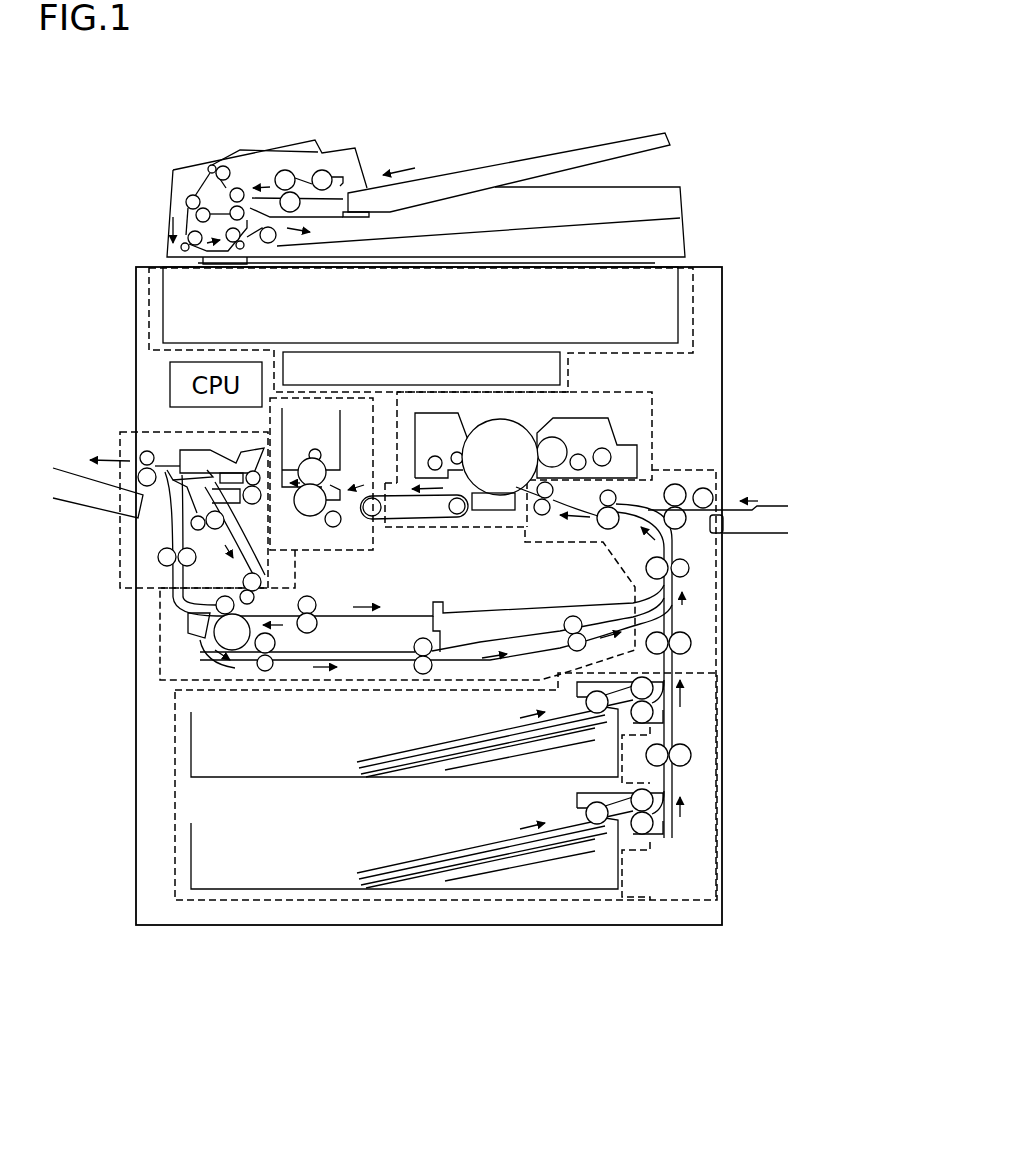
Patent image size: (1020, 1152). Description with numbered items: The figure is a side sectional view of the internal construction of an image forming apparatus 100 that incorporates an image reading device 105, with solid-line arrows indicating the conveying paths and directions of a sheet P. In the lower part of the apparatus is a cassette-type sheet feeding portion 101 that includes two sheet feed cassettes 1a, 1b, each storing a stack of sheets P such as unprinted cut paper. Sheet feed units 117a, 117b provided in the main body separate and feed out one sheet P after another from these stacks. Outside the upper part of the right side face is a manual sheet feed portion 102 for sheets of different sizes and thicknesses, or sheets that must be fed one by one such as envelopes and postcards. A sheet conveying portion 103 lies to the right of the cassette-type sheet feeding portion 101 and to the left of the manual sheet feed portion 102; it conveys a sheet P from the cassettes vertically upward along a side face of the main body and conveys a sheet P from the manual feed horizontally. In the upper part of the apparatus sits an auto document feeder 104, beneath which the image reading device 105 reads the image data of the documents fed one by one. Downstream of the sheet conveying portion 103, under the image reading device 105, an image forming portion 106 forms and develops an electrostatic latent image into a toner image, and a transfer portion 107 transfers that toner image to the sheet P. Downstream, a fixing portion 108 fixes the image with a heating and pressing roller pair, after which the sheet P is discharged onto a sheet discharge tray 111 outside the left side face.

The image forming apparatus 100 is at (718, 149).
The cassette-type sheet feeding portion 101 is at (175, 870).
The manual sheet feed portion 102 is at (792, 515).
The sheet conveying portion 103 is at (680, 470).
The auto document feeder 104 is at (465, 168).
The image reading device 105 is at (693, 338).
The image forming portion 106 is at (600, 392).
The transfer portion 107 is at (503, 527).
The fixing portion 108 is at (330, 548).
The sheet discharge tray 111 is at (72, 500).
The sheet feed unit 117a is at (668, 690).
The sheet feed unit 117b is at (670, 798).
The sheet feed cassette 1a is at (190, 742).
The sheet feed cassette 1b is at (190, 845).
The sheet P is at (413, 877).